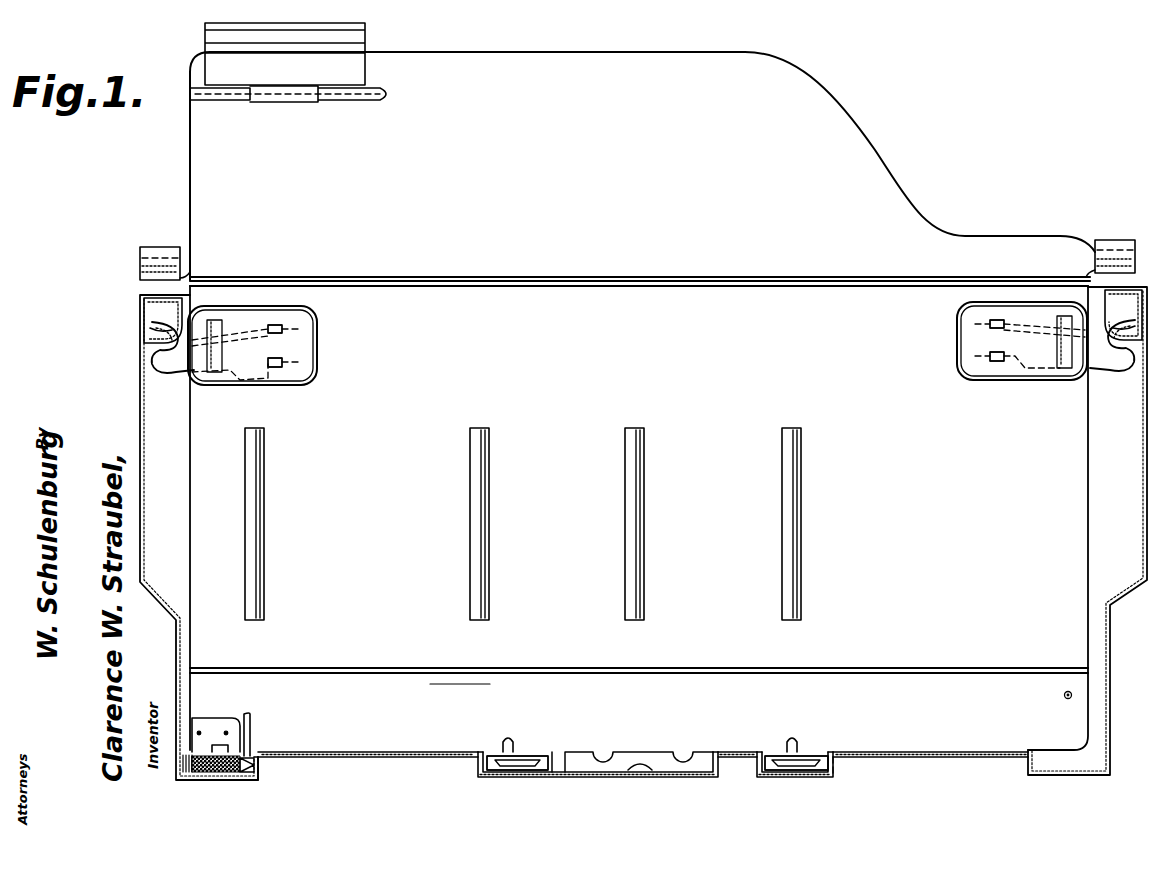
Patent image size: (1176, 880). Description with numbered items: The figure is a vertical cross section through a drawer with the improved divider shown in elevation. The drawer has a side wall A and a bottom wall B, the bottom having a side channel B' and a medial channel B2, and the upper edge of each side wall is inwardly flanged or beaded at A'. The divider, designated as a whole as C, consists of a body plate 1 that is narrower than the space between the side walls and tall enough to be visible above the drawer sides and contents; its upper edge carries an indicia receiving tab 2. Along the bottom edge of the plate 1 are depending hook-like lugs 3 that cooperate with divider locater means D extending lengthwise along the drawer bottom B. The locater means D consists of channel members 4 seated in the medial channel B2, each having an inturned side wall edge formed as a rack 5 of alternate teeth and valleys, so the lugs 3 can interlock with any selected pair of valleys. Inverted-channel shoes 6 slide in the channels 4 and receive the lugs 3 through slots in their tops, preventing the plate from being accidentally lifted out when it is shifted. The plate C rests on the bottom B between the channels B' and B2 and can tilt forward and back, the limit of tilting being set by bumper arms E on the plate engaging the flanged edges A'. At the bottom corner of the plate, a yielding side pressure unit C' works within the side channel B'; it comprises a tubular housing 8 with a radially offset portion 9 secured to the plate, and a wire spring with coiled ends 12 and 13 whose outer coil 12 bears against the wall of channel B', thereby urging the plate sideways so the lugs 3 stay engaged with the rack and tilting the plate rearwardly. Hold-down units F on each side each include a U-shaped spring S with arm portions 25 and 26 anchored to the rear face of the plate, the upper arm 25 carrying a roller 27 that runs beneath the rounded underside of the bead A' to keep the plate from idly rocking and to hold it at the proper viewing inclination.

The body plate 1 is at (523, 498).
The indicia receiving member or tab 2 is at (359, 72).
The hook-like lugs 3 is at (492, 764).
The channel members 4 is at (540, 772).
The rack formation 5 is at (548, 756).
The shoes 6 is at (506, 748).
The tubular housing or barrel 8 is at (252, 762).
The radially offset portion 9 is at (216, 730).
The coiled end 12 is at (184, 766).
The coiled end 13 is at (256, 774).
The upper arm 25 is at (279, 326).
The lower arm 26 is at (256, 382).
The roller 27 is at (160, 332).
The side wall A is at (643, 533).
The inward flange or bead A' is at (633, 294).
The bottom wall B is at (643, 741).
The side channel B' is at (291, 772).
The medial channel B2 is at (838, 761).
The divider C is at (642, 401).
The spring unit C' is at (271, 724).
The divider locater means D is at (540, 748).
The bumper arms E is at (152, 247).
The yielding hold-down units F is at (637, 343).
The U-shaped spring S is at (165, 370).